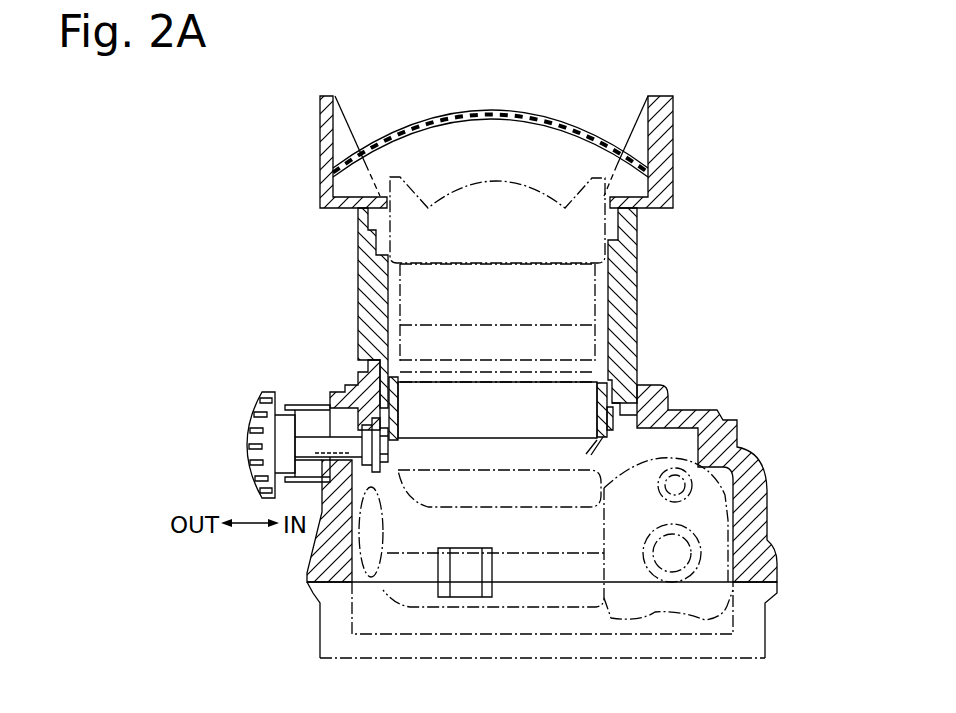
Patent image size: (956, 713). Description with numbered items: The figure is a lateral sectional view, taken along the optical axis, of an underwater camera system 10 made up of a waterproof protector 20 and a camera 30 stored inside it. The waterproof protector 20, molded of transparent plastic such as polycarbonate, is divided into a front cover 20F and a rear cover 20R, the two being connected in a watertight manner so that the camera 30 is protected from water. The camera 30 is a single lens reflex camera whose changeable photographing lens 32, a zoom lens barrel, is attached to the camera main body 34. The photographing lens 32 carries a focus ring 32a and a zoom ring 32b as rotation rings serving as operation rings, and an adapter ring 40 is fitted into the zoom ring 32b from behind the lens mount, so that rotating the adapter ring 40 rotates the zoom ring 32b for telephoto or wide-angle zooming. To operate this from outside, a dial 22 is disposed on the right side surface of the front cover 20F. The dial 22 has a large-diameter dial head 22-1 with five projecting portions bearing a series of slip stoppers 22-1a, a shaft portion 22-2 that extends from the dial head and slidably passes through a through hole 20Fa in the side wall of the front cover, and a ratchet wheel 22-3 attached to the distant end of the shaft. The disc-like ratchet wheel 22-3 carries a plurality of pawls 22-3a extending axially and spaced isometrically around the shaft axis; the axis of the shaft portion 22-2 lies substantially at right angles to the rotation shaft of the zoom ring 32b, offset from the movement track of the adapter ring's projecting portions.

The underwater camera system 10 is at (762, 321).
The waterproof protector 20 is at (343, 297).
The front cover 20F is at (740, 463).
The rear cover 20R is at (763, 628).
The through hole 20Fa is at (340, 427).
The dial 22 is at (236, 389).
The dial head 22-1 is at (257, 433).
The slip stoppers 22-1a is at (265, 392).
The shaft portion 22-2 is at (313, 443).
The ratchet wheel 22-3 is at (381, 474).
The pawls 22-3a is at (395, 441).
The camera 30 is at (628, 619).
The photographing lens 32 is at (597, 338).
The focus ring 32a is at (578, 290).
The zoom ring 32b is at (560, 396).
The camera main body 34 is at (713, 517).
The adapter ring 40 is at (613, 431).